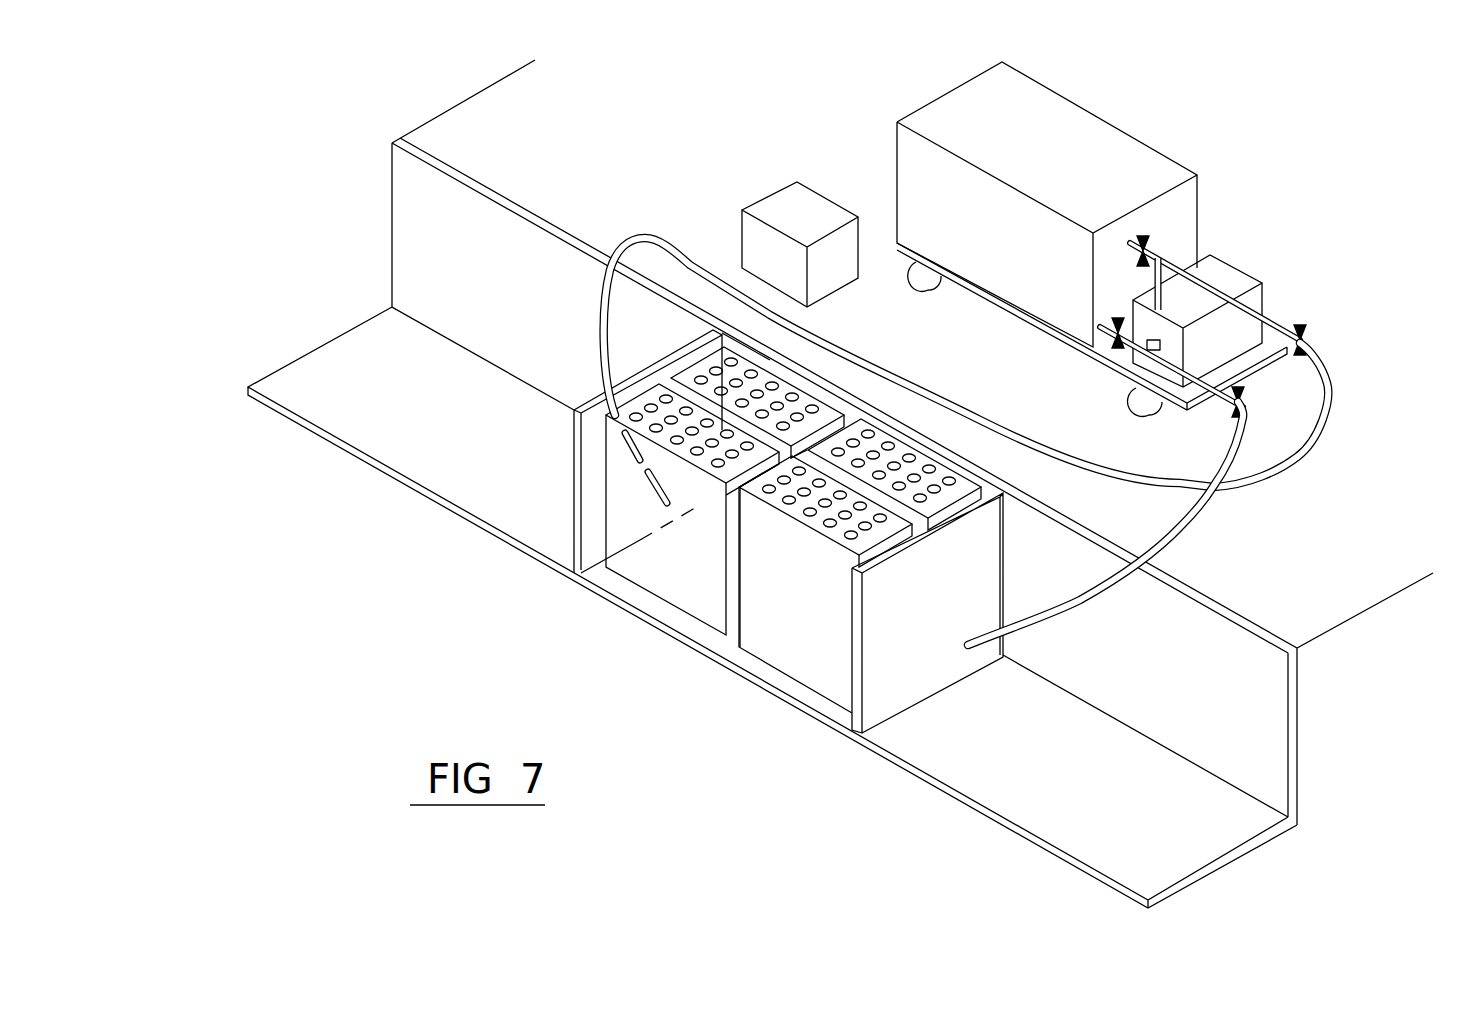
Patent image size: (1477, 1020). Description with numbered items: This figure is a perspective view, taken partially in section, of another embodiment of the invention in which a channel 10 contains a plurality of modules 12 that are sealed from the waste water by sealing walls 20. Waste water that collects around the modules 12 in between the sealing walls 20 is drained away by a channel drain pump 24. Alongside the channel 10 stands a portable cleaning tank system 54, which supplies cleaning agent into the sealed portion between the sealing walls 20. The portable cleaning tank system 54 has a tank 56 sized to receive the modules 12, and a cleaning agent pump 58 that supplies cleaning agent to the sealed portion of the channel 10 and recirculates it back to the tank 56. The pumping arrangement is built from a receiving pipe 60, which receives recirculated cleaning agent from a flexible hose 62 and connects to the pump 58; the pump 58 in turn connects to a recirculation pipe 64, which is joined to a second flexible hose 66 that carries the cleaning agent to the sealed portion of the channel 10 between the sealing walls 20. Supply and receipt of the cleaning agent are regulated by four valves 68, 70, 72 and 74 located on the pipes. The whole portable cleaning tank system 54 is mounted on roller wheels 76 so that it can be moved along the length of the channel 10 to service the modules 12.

The channel 10 is at (900, 790).
The module 12 is at (675, 597).
The sealing wall 20 is at (565, 532).
The channel drain pump 24 is at (788, 205).
The portable cleaning tank system 54 is at (1232, 207).
The tank 56 is at (917, 178).
The cleaning agent pump 58 is at (1265, 283).
The receiving pipe 60 is at (1222, 398).
The flexible hose 62 is at (1193, 525).
The recirculation pipe 64 is at (1293, 327).
The flexible hose 66 is at (1327, 427).
The valve 68 is at (1147, 240).
The valve 70 is at (1313, 330).
The valve 72 is at (1245, 395).
The valve 74 is at (1118, 350).
The roller wheel 76 is at (930, 285).